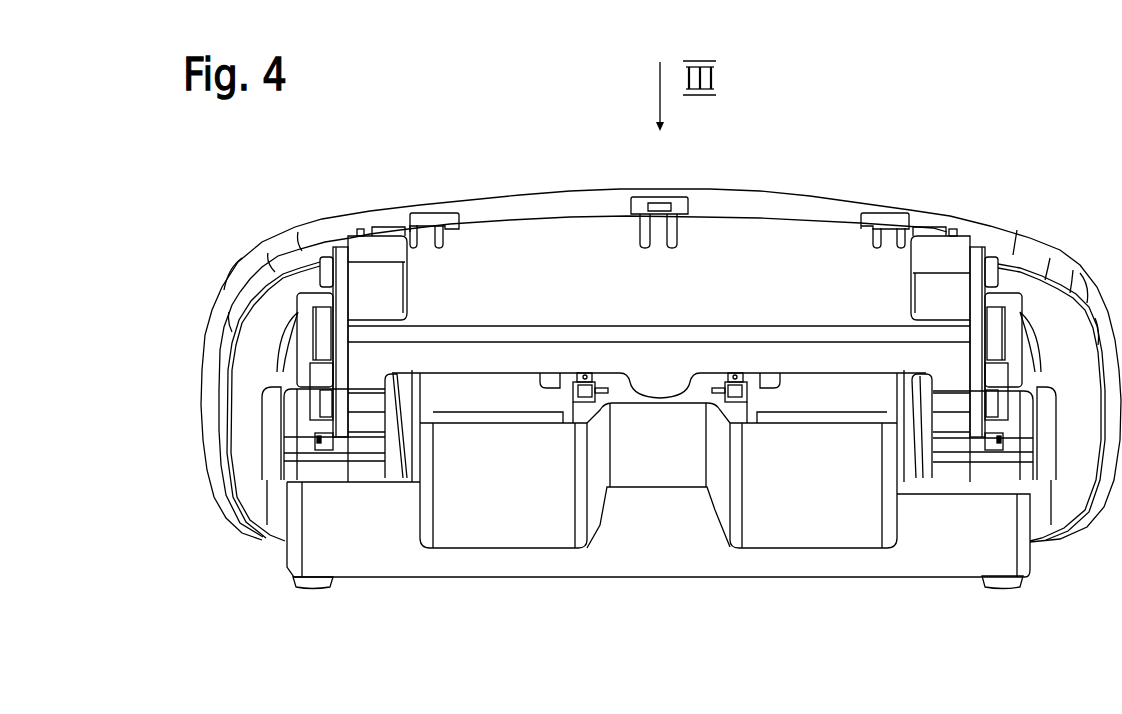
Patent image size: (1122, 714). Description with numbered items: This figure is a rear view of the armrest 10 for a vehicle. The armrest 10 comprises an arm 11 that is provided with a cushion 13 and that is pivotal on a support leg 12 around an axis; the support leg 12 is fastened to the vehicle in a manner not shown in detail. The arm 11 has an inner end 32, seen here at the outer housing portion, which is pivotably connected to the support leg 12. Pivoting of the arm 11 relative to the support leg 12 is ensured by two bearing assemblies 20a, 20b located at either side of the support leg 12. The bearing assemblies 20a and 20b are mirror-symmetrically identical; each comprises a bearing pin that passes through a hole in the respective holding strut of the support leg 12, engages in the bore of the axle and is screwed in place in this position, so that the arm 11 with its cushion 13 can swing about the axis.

The armrest 10 is at (637, 338).
The arm 11 is at (629, 368).
The support leg 12 is at (658, 525).
The cushion 13 is at (659, 213).
The bearing assembly 20a is at (348, 293).
The bearing assembly 20b is at (968, 298).
The inner end 32 is at (661, 313).